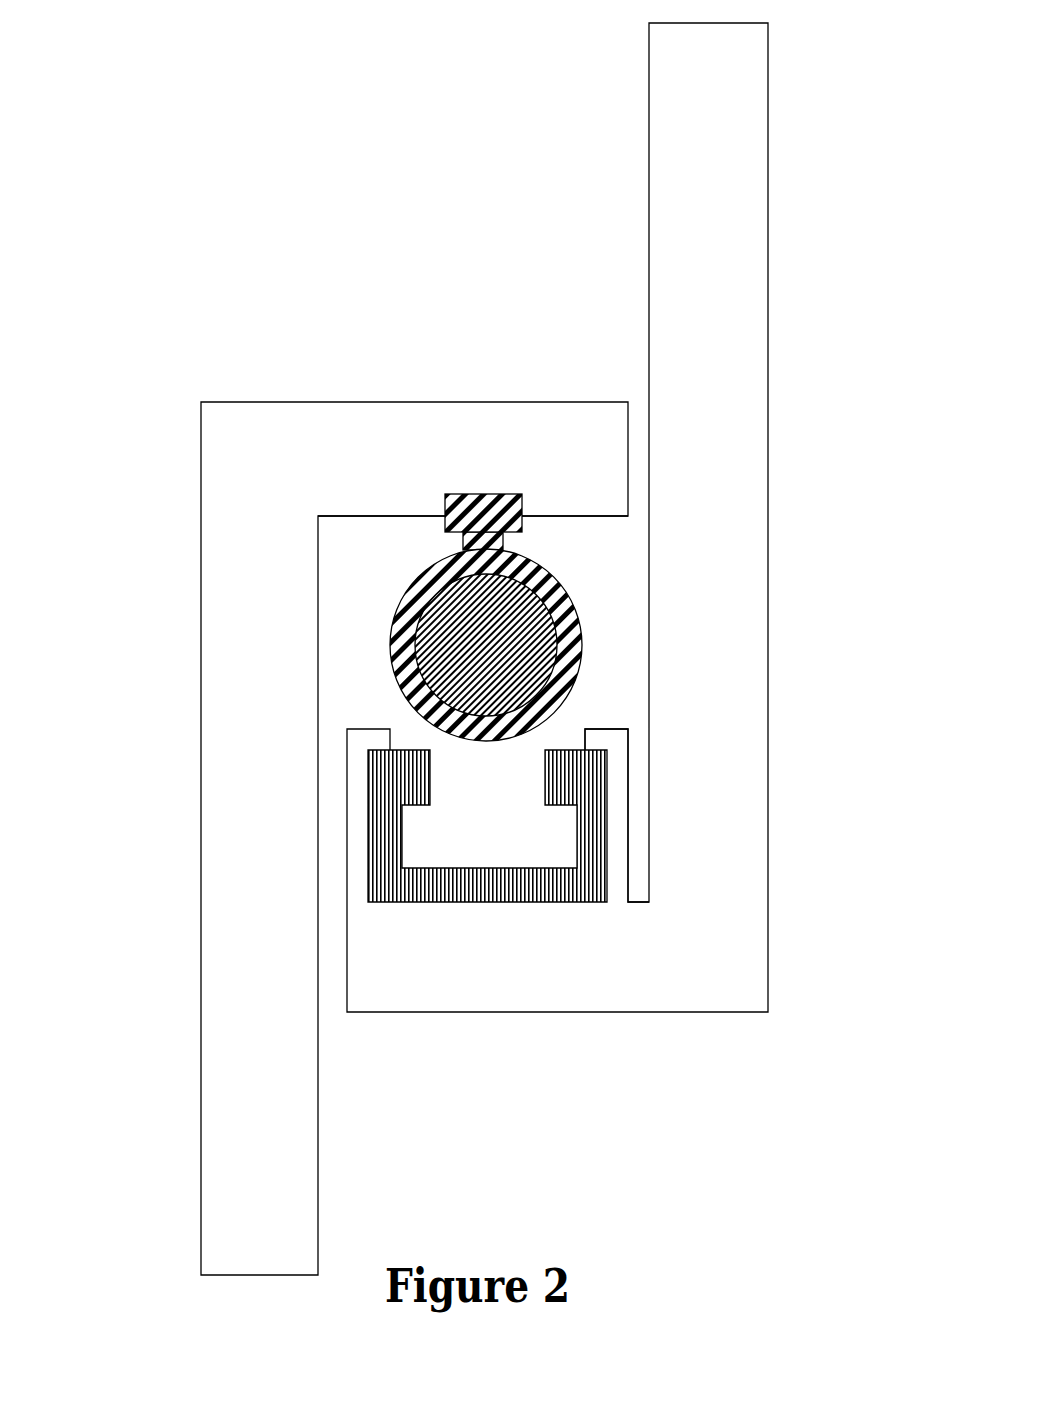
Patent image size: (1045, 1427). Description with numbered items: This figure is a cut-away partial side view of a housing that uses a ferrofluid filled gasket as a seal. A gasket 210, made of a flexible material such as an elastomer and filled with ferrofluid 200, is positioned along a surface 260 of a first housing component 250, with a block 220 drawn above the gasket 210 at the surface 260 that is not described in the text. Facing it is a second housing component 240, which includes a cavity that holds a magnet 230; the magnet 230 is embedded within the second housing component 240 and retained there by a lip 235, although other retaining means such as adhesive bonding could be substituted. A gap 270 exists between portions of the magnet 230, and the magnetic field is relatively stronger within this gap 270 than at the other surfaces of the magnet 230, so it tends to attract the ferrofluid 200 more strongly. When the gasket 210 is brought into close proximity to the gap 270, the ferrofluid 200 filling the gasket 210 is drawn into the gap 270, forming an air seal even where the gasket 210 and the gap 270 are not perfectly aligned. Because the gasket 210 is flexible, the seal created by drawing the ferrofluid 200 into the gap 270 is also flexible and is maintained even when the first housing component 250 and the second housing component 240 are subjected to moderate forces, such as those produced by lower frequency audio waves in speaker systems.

The ferrofluid 200 is at (432, 668).
The gasket 210 is at (565, 588).
The mounting block 220 is at (461, 487).
The magnet 230 is at (393, 887).
The lip 235 is at (610, 728).
The second housing component 240 is at (747, 825).
The first housing component 250 is at (245, 652).
The surface 260 is at (362, 513).
The gap 270 is at (477, 795).